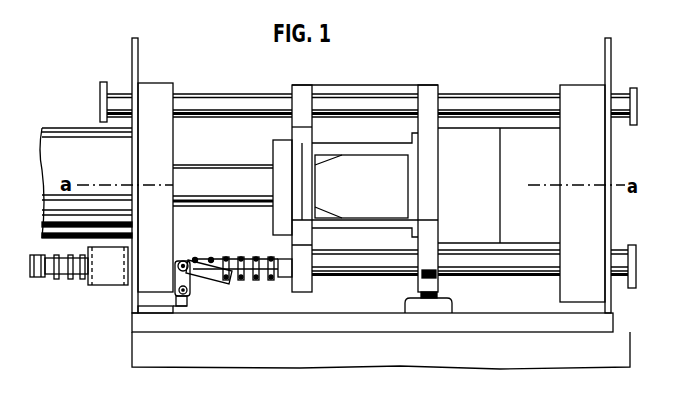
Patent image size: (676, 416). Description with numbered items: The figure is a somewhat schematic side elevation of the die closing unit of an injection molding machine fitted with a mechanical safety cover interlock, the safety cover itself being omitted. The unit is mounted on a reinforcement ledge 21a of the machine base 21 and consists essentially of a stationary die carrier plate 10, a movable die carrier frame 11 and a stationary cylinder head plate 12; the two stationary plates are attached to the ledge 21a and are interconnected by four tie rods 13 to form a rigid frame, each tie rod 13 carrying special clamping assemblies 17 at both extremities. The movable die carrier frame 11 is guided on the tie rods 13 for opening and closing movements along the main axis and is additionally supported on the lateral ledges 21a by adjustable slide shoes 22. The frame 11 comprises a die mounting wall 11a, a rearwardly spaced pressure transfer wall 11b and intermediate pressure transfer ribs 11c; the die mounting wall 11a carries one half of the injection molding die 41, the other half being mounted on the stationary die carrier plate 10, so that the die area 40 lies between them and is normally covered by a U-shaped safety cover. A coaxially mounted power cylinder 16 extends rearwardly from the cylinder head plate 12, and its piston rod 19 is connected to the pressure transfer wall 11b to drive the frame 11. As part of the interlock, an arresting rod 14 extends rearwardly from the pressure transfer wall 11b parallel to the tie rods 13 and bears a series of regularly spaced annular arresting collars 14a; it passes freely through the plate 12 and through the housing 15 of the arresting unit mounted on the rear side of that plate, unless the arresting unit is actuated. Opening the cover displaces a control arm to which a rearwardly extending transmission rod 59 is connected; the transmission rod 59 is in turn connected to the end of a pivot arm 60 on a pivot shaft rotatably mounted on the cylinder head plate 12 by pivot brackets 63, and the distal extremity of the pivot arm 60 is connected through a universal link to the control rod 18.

The stationary die carrier plate 10 is at (607, 73).
The movable die carrier frame 11 is at (408, 78).
The die mounting wall 11a is at (428, 220).
The pressure transfer wall 11b is at (302, 107).
The pressure transfer ribs 11c is at (342, 127).
The stationary cylinder head plate 12 is at (139, 62).
The tie rods 13 is at (485, 107).
The arresting rod 14 is at (262, 270).
The annular arresting collars 14a is at (252, 258).
The housing 15 is at (113, 273).
The power cylinder 16 is at (68, 137).
The clamping assemblies 17 is at (118, 94).
The control rod 18 is at (177, 258).
The piston rod 19 is at (230, 175).
The machine base 21 is at (160, 347).
The reinforcement ledge 21a is at (190, 325).
The adjustable slide shoes 22 is at (430, 307).
The die area 40 is at (530, 245).
The injection molding die 41 is at (486, 153).
The transmission rod 59 is at (210, 258).
The pivot arm 60 is at (193, 280).
The pivot brackets 63 is at (185, 300).